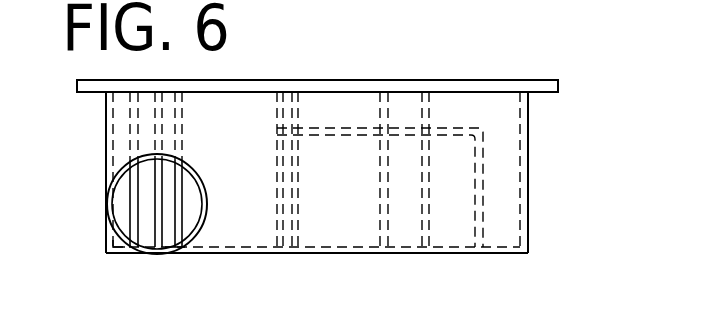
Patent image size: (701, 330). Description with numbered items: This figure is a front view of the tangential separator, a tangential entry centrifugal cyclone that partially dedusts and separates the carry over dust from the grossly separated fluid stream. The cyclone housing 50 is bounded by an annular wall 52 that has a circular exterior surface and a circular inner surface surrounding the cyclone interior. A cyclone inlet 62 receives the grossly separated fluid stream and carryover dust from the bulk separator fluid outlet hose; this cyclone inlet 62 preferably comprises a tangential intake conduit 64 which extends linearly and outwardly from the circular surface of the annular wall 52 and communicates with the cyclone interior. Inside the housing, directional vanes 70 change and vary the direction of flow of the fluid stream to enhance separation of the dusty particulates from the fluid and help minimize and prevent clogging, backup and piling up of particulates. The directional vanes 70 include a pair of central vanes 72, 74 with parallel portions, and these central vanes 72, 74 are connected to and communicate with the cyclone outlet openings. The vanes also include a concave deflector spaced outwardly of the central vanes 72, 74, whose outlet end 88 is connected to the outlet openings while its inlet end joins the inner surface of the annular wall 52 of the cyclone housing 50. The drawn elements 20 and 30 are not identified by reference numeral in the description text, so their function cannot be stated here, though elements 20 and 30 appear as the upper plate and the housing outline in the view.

The cover plate 20 is at (530, 92).
The housing 30 is at (528, 212).
The cyclone housing 50 is at (528, 255).
The cyclone housing annular wall 52 is at (528, 158).
The directional vanes 70 is at (192, 180).
The central vane 72 is at (145, 173).
The central vane 74 is at (173, 218).
The outlet end of concave deflector 88 is at (133, 190).
The tangential intake conduit 64 is at (125, 243).
The cyclone inlet 62 is at (172, 247).